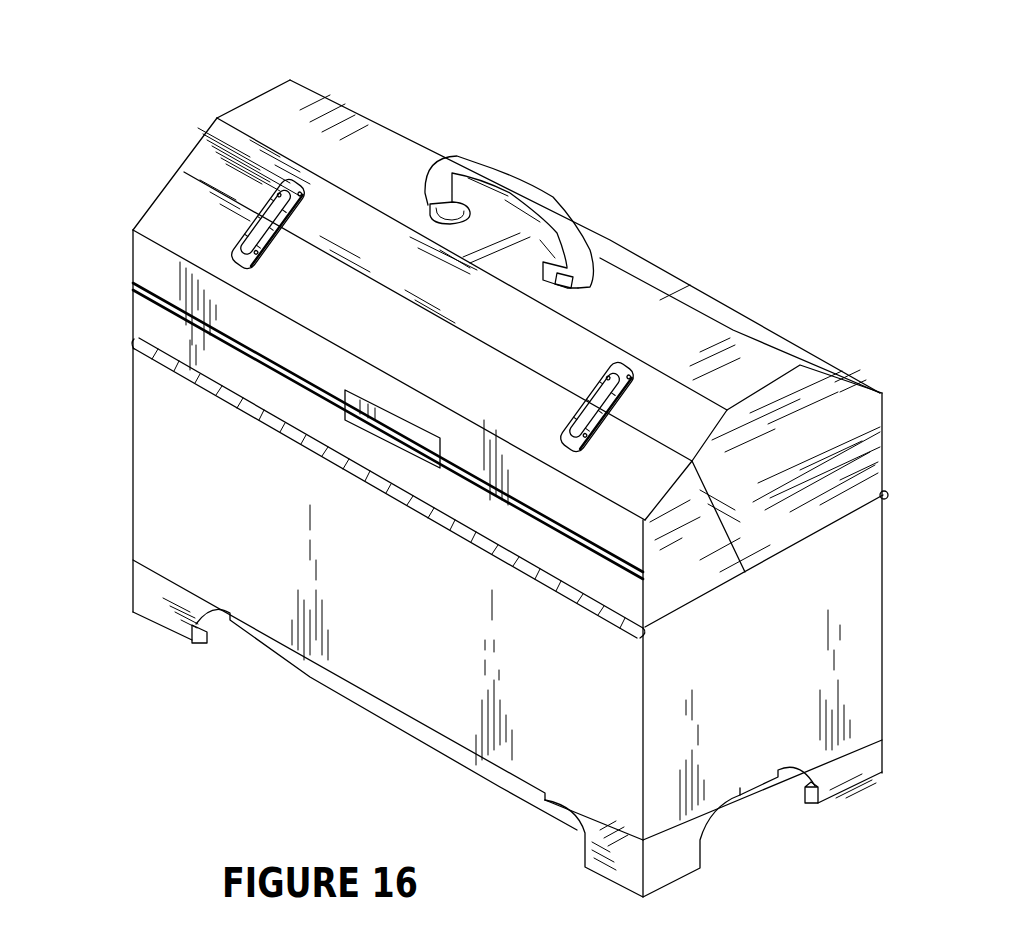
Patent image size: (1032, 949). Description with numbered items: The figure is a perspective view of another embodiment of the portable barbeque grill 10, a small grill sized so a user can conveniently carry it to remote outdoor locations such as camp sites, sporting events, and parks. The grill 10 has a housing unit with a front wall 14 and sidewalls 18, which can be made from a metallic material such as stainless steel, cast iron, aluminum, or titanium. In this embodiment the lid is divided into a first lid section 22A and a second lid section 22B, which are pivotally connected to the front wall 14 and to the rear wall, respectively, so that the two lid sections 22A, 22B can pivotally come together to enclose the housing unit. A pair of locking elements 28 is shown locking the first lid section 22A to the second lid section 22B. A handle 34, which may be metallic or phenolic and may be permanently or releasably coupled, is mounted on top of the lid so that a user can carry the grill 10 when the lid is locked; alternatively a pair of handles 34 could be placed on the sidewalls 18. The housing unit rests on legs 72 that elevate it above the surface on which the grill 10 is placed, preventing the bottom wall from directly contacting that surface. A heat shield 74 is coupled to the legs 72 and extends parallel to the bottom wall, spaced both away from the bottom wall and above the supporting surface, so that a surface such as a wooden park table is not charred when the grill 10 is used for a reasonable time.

The portable barbeque grill 10 is at (762, 167).
The front wall 14 is at (408, 595).
The sidewalls 18 is at (773, 702).
The first lid section 22A is at (180, 213).
The second lid section 22B is at (315, 115).
The locking element 28 is at (297, 220).
The handle 34 is at (508, 188).
The legs 72 is at (676, 872).
The heat shield 74 is at (777, 802).